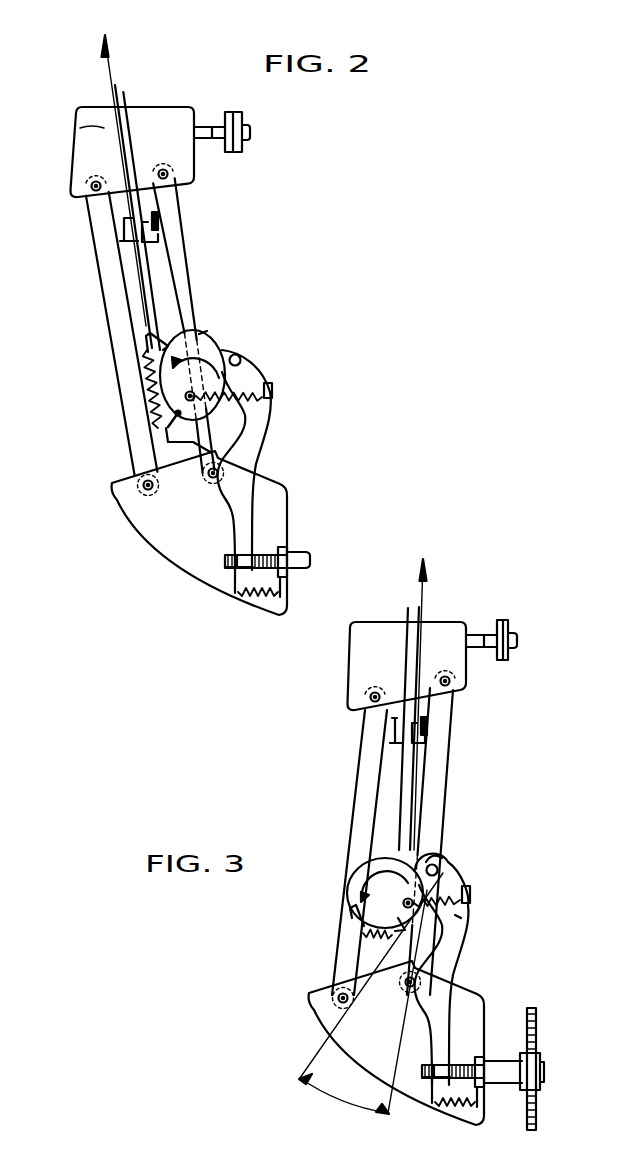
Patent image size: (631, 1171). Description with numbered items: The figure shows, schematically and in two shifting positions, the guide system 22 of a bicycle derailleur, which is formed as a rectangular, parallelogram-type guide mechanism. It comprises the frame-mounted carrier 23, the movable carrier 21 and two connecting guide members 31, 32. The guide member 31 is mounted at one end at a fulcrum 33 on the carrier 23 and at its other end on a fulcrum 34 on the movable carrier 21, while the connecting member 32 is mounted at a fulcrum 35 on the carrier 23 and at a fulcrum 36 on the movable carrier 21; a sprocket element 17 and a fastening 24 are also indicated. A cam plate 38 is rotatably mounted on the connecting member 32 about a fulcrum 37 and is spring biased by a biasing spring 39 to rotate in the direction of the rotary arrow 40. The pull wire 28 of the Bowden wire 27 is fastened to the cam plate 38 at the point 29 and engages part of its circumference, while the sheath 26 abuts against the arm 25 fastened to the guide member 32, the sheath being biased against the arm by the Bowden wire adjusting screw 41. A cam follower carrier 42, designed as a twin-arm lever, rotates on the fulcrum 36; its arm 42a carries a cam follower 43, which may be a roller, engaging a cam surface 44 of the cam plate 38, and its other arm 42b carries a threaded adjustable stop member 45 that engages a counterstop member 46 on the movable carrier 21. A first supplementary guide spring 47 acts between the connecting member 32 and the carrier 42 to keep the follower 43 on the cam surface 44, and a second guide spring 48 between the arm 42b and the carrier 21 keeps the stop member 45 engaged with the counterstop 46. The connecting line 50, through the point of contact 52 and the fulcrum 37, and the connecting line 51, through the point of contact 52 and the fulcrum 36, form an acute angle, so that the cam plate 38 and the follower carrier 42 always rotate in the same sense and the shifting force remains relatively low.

In FIG. 2, the sprocket wheel / drive shaft 17 is at (293, 550).
In FIG. 3, the sprocket wheel / drive shaft 17 is at (538, 1020).
In FIG. 2, the movable carrier 21 is at (173, 538).
In FIG. 3, the movable carrier 21 is at (320, 1020).
In FIG. 2, the guide system 22 is at (92, 314).
In FIG. 3, the guide system 22 is at (342, 812).
In FIG. 2, the frame-mounted carrier 23 is at (87, 146).
In FIG. 3, the frame-mounted carrier 23 is at (358, 668).
In FIG. 2, the bolt 24 is at (235, 113).
In FIG. 3, the bolt 24 is at (506, 621).
In FIG. 2, the arm 25 is at (158, 231).
In FIG. 3, the arm 25 is at (427, 737).
In FIG. 2, the sheath 26 is at (100, 127).
In FIG. 2, the Bowden wire 27 is at (131, 129).
In FIG. 3, the Bowden wire 27 is at (427, 643).
In FIG. 2, the pull wire 28 is at (110, 62).
In FIG. 3, the pull wire 28 is at (426, 589).
In FIG. 2, the fastening point 29 is at (173, 437).
In FIG. 3, the fastening point 29 is at (408, 903).
In FIG. 2, the connecting guide member 31 is at (100, 271).
In FIG. 3, the connecting guide member 31 is at (365, 769).
In FIG. 2, the connecting guide member 32 is at (185, 263).
In FIG. 3, the connecting guide member 32 is at (442, 763).
In FIG. 2, the fulcrum 33 is at (92, 187).
In FIG. 3, the fulcrum 33 is at (368, 702).
In FIG. 2, the fulcrum 34 is at (148, 493).
In FIG. 3, the fulcrum 34 is at (338, 993).
In FIG. 2, the fulcrum 35 is at (170, 173).
In FIG. 3, the fulcrum 35 is at (452, 681).
In FIG. 2, the fulcrum 36 is at (217, 480).
In FIG. 3, the fulcrum 36 is at (418, 979).
In FIG. 2, the fulcrum 37 is at (153, 410).
In FIG. 3, the fulcrum 37 is at (353, 877).
In FIG. 2, the cam plate 38 is at (212, 348).
In FIG. 3, the cam plate 38 is at (370, 862).
In FIG. 2, the biasing spring 39 is at (143, 380).
In FIG. 3, the biasing spring 39 is at (365, 938).
In FIG. 2, the rotary arrow 40 is at (187, 333).
In FIG. 3, the rotary arrow 40 is at (360, 894).
In FIG. 2, the Bowden wire adjusting screw 41 is at (120, 222).
In FIG. 3, the Bowden wire adjusting screw 41 is at (396, 730).
In FIG. 2, the cam follower carrier 42 is at (280, 458).
In FIG. 3, the cam follower carrier 42 is at (483, 969).
In FIG. 2, the arm 42a is at (253, 370).
In FIG. 3, the arm 42a is at (470, 905).
In FIG. 2, the arm 42b is at (247, 520).
In FIG. 3, the arm 42b is at (452, 1033).
In FIG. 2, the cam follower 43 is at (241, 358).
In FIG. 3, the cam follower 43 is at (439, 868).
In FIG. 2, the cam surface 44 is at (205, 332).
In FIG. 3, the cam surface 44 is at (460, 917).
In FIG. 2, the adjustable stop member 45 is at (232, 569).
In FIG. 3, the adjustable stop member 45 is at (433, 1080).
In FIG. 2, the counterstop member 46 is at (283, 576).
In FIG. 3, the counterstop member 46 is at (478, 1060).
In FIG. 2, the first supplementary guide spring 47 is at (273, 398).
In FIG. 3, the first supplementary guide spring 47 is at (471, 893).
In FIG. 2, the second guide spring 48 is at (263, 598).
In FIG. 3, the second guide spring 48 is at (472, 1103).
In FIG. 3, the connecting line 50 is at (312, 1058).
In FIG. 3, the connecting line 51 is at (392, 1065).
In FIG. 3, the point of contact 52 is at (434, 862).